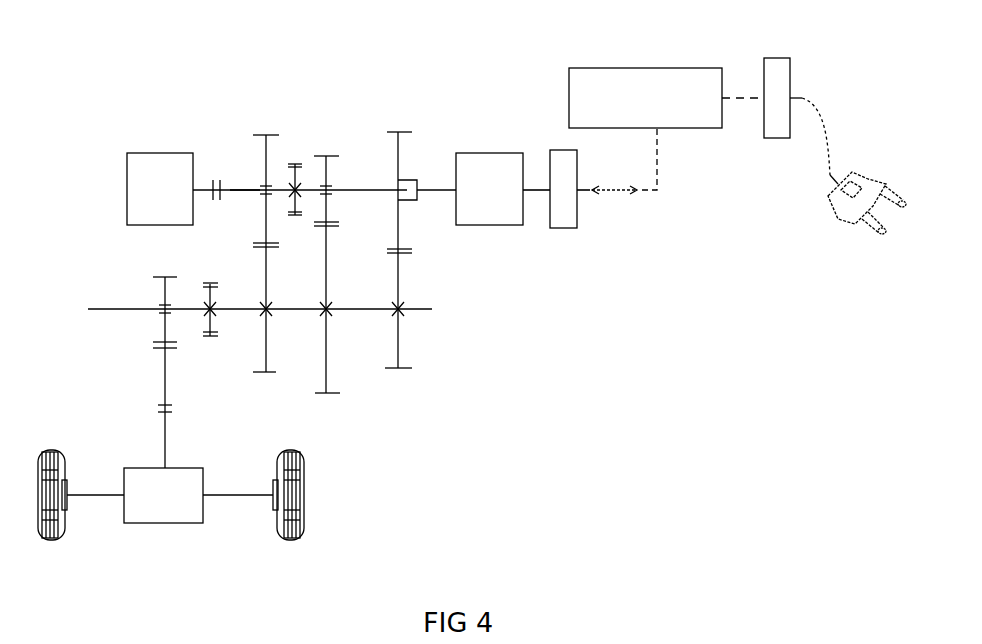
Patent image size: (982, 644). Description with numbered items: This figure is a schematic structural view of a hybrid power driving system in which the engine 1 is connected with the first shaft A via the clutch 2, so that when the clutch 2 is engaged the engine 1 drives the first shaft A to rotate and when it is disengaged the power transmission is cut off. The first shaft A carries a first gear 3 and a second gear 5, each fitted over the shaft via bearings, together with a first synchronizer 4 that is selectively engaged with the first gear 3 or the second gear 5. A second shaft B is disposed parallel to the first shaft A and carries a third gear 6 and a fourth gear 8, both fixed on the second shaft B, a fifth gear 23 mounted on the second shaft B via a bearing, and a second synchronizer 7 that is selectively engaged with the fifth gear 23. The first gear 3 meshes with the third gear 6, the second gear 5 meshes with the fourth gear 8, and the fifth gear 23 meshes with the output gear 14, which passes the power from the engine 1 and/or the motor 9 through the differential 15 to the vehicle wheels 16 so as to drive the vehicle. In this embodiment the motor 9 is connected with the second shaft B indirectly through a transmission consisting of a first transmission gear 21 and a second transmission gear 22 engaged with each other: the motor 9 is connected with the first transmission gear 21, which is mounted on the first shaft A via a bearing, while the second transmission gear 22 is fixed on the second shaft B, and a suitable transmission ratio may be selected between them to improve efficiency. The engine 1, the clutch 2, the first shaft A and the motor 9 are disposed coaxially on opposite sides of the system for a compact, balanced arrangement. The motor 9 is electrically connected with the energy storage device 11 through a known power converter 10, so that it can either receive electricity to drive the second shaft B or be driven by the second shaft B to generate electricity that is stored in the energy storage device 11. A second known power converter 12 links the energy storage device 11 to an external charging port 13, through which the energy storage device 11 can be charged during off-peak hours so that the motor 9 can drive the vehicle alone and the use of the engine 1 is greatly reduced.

The engine 1 is at (145, 218).
The clutch 2 is at (216, 180).
The first shaft A is at (242, 200).
The first gear 3 is at (268, 163).
The first synchronizer 4 is at (295, 217).
The second gear 5 is at (330, 172).
The first transmission gear 21 is at (401, 156).
The motor 9 is at (491, 218).
The power converter 10 is at (568, 225).
The energy storage device 11 is at (640, 68).
The power converter 12 is at (775, 130).
The external charging port 13 is at (855, 235).
The second shaft B is at (105, 310).
The fifth gear 23 is at (163, 318).
The second synchronizer 7 is at (210, 340).
The third gear 6 is at (264, 336).
The fourth gear 8 is at (328, 330).
The second transmission gear 22 is at (401, 328).
The output gear 14 is at (170, 402).
The differential 15 is at (162, 525).
The vehicle wheels 16 is at (66, 470).